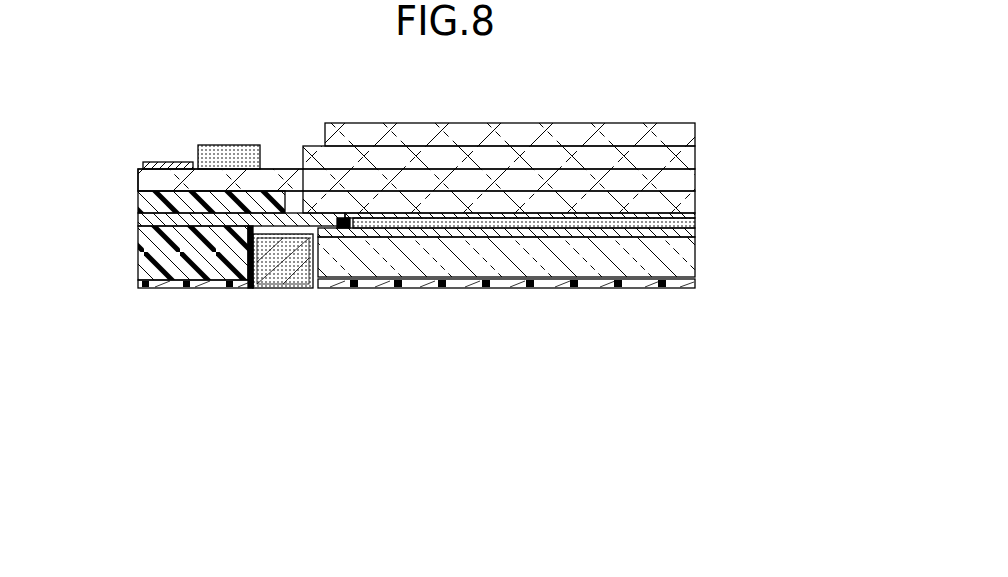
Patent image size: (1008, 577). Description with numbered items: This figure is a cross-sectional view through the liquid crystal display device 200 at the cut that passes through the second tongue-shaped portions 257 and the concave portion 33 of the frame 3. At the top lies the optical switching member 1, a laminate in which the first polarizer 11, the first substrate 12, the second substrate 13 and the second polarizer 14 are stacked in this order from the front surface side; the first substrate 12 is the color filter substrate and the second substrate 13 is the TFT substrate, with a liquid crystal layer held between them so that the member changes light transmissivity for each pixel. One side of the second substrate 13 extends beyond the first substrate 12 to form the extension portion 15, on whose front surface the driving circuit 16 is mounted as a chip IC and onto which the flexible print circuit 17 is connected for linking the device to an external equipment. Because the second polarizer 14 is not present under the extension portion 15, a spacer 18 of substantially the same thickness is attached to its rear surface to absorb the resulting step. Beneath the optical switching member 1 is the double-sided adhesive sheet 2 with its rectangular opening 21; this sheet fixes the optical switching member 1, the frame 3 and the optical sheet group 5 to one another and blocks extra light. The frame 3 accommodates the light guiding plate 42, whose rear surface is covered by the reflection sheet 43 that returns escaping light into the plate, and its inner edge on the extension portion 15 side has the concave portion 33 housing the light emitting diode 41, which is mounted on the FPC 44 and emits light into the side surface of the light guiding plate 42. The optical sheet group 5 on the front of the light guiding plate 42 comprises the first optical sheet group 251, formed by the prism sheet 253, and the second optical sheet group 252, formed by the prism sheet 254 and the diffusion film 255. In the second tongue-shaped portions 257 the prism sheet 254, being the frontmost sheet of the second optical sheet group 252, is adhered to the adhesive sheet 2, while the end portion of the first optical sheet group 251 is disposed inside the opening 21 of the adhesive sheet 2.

The display device 200 is at (262, 398).
The optical switching member 1 is at (783, 98).
The first polarizer 11 is at (697, 132).
The first substrate 12 is at (697, 157).
The second substrate 13 is at (697, 178).
The second polarizer 14 is at (697, 198).
The extension portion 15 is at (287, 168).
The driving circuit 16 is at (230, 147).
The flexible print circuit (FPC) 17 is at (177, 162).
The spacer 18 is at (138, 197).
The adhesive sheet 2 is at (138, 217).
The opening 21 is at (350, 212).
The frame 3 is at (138, 257).
The concave portion 33 is at (270, 282).
The light emitting diode (LED) 41 is at (285, 255).
The light guiding plate 42 is at (697, 260).
The reflection sheet 43 is at (632, 288).
The FPC 44 is at (200, 288).
The optical sheet group 5 is at (880, 212).
The first optical sheet group 251 is at (607, 223).
The second optical sheet group 252 is at (800, 240).
The prism sheet 253 is at (697, 222).
The prism sheet 254 is at (698, 230).
The diffusion film 255 is at (697, 235).
The second tongue-shaped portions 257 is at (322, 243).